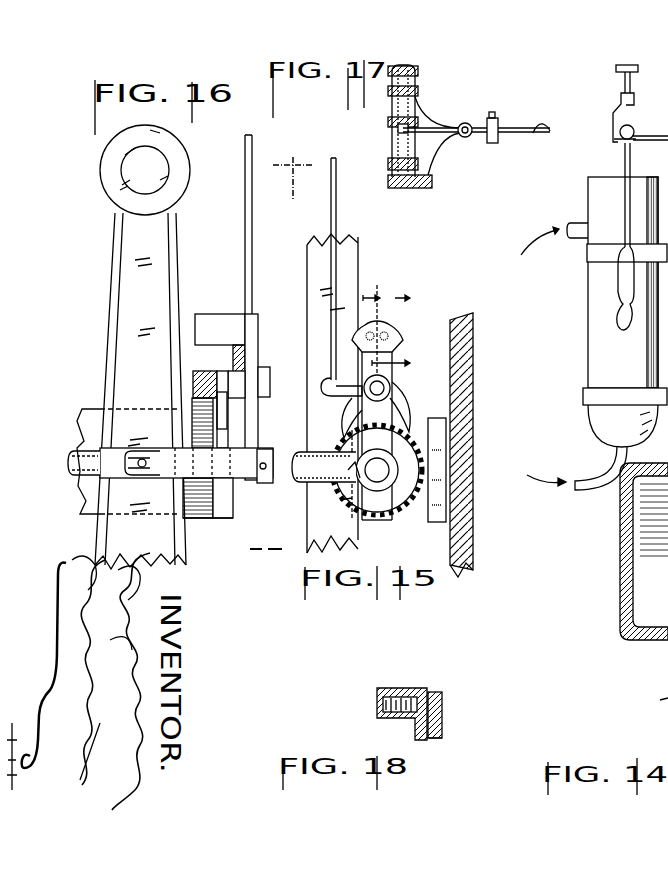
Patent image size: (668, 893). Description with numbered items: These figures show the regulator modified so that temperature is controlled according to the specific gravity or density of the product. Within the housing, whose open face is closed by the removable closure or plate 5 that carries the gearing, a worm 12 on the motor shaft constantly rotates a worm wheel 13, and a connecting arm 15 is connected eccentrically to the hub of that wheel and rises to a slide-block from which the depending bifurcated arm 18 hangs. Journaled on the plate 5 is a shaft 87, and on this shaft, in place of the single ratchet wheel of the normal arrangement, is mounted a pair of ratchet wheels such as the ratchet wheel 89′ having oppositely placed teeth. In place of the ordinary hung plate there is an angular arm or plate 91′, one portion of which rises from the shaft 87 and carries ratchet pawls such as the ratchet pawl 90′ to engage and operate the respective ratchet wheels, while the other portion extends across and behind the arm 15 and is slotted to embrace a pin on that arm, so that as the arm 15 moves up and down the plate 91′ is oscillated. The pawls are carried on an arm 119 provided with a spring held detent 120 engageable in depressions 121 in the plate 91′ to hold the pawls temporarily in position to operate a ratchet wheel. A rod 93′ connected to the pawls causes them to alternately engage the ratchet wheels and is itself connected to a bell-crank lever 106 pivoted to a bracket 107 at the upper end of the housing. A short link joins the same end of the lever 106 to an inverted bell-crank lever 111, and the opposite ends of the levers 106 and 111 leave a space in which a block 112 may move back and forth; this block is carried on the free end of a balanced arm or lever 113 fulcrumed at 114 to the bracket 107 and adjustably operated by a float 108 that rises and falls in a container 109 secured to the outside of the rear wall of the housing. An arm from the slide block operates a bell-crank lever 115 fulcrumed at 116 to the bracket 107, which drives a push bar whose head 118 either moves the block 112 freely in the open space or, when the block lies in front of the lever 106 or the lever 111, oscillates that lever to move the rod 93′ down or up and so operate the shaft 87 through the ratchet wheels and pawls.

In FIG. 15, the removable closure or plate 5 is at (475, 363).
In FIG. 14, the worm 12 is at (644, 535).
In FIG. 14, the worm wheel 13 is at (667, 699).
In FIG. 16, the connecting arm 15 is at (142, 347).
In FIG. 15, the connecting arm 15 is at (332, 393).
In FIG. 15, the depending bifurcated arm 18 is at (398, 331).
In FIG. 16, the shaft 87 is at (70, 457).
In FIG. 15, the shaft 87 is at (375, 485).
In FIG. 16, the ratchet wheel 89′ is at (203, 519).
In FIG. 15, the ratchet wheel 89′ is at (345, 488).
In FIG. 16, the ratchet pawl 90′ is at (198, 380).
In FIG. 15, the ratchet pawl 90′ is at (348, 404).
In FIG. 16, the angular arm or plate 91′ is at (255, 434).
In FIG. 15, the angular arm or plate 91′ is at (378, 441).
In FIG. 18, the angular arm or plate 91′ is at (443, 725).
In FIG. 16, the rod 93′ is at (245, 240).
In FIG. 15, the rod 93′ is at (337, 225).
In FIG. 17, the bell-crank lever 106 is at (390, 168).
In FIG. 17, the bracket 107 is at (428, 158).
In FIG. 14, the float 108 is at (617, 279).
In FIG. 14, the container 109 is at (592, 352).
In FIG. 17, the bell-crank lever 111 is at (416, 88).
In FIG. 17, the block 112 is at (397, 129).
In FIG. 17, the balanced arm or lever 113 is at (507, 131).
In FIG. 14, the balanced arm or lever 113 is at (640, 136).
In FIG. 17, the fulcrum 114 is at (470, 125).
In FIG. 17, the bell-crank lever 115 is at (416, 70).
In FIG. 17, the fulcrum 116 is at (420, 78).
In FIG. 17, the head 118 is at (418, 121).
In FIG. 16, the arm 119 is at (235, 325).
In FIG. 15, the arm 119 is at (385, 355).
In FIG. 18, the arm 119 is at (418, 735).
In FIG. 18, the spring held detent 120 is at (425, 690).
In FIG. 18, the depressions 121 is at (443, 703).